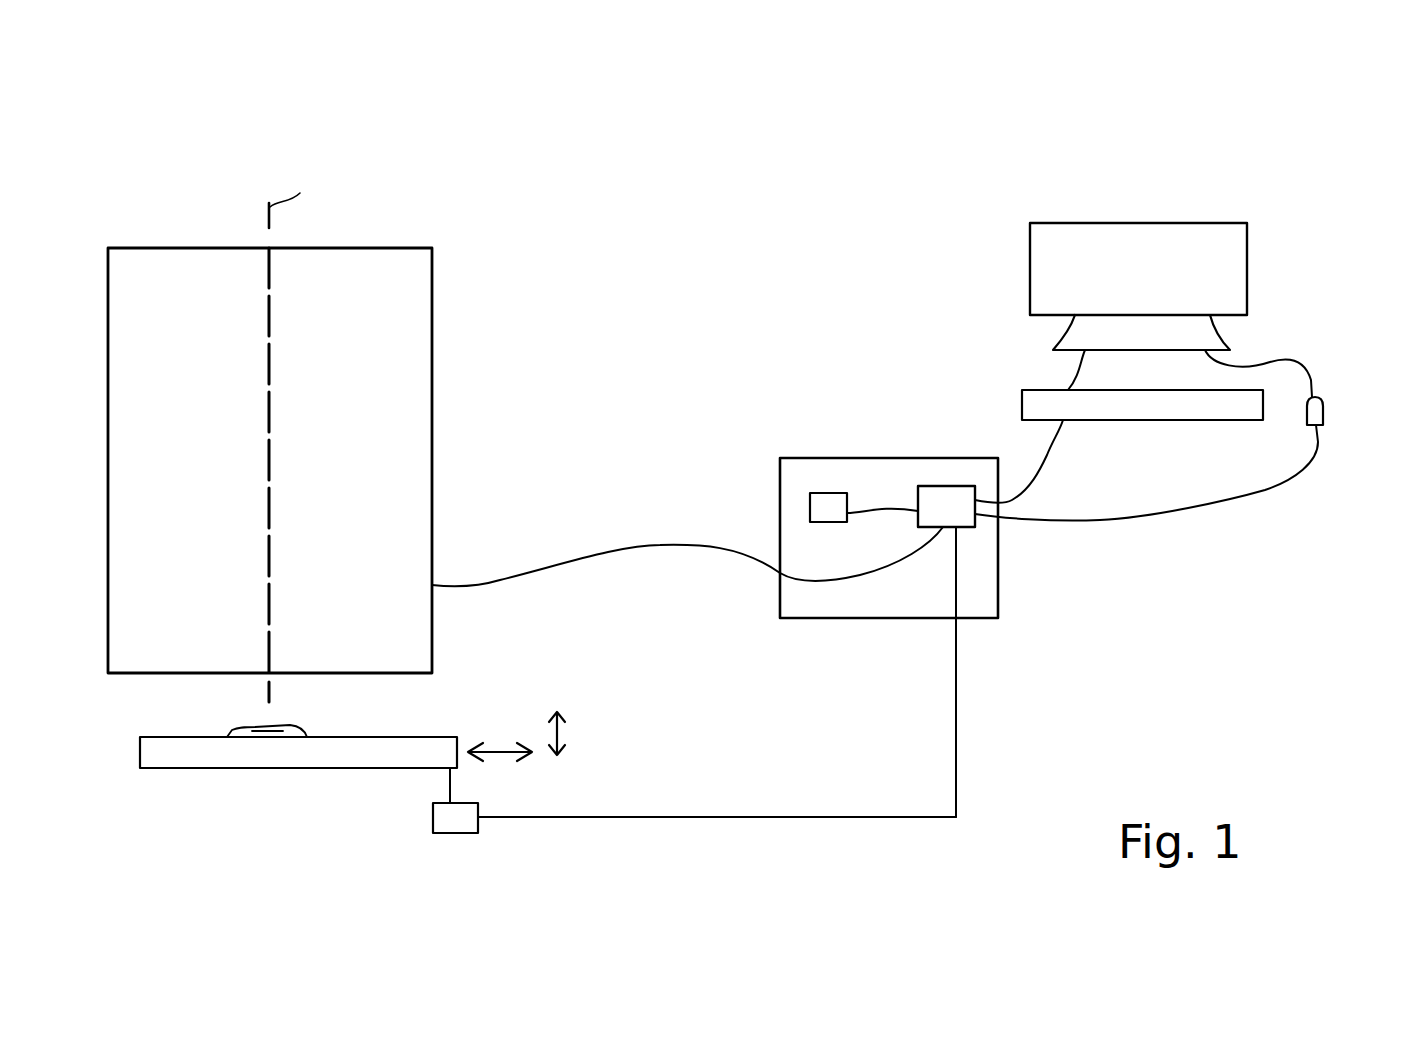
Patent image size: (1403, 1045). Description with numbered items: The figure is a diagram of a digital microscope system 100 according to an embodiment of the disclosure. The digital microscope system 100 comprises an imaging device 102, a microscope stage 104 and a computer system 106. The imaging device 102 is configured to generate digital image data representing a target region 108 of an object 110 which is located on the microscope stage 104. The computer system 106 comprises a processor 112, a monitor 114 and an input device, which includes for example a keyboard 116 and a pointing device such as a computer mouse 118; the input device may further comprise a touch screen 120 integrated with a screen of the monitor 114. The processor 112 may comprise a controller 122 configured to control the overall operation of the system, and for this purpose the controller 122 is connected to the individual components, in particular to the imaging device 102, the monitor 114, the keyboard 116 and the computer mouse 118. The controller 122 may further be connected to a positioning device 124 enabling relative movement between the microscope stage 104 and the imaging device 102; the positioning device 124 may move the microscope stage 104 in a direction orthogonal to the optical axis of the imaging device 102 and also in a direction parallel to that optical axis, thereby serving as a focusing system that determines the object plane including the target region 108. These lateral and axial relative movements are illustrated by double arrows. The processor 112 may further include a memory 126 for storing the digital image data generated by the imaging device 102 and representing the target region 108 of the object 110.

The digital microscope system 100 is at (770, 201).
The imaging device 102 is at (432, 418).
The microscope stage 104 is at (197, 768).
The computer system 106 is at (1148, 578).
The target region 108 is at (274, 728).
The object 110 is at (300, 733).
The processor 112 is at (987, 618).
The monitor 114 is at (1208, 222).
The keyboard 116 is at (1197, 420).
The computer mouse 118 is at (1324, 413).
The touch screen 120 is at (1038, 291).
The controller 122 is at (940, 486).
The positioning device 124 is at (448, 833).
The memory 126 is at (833, 493).